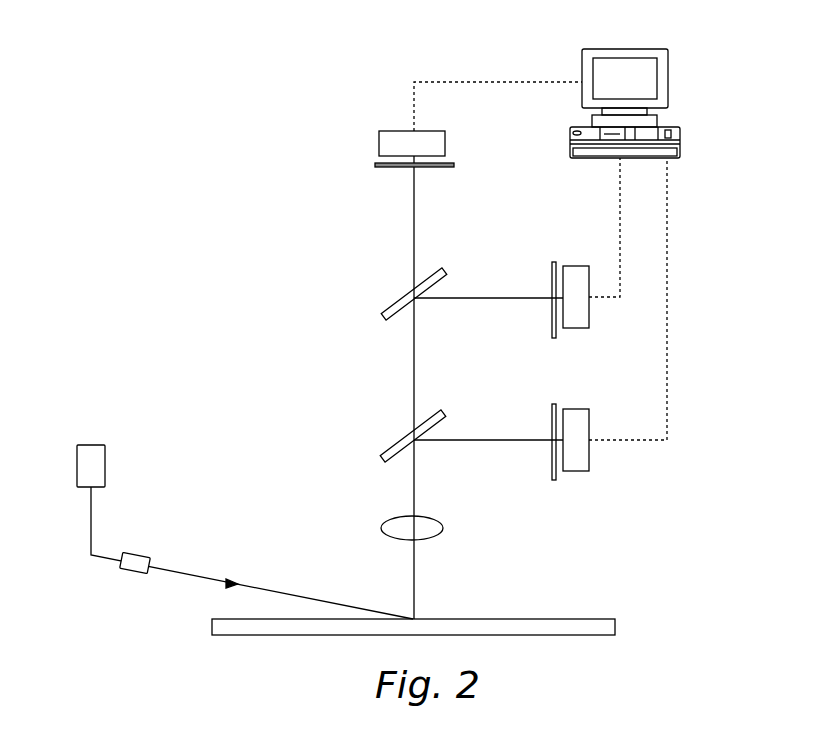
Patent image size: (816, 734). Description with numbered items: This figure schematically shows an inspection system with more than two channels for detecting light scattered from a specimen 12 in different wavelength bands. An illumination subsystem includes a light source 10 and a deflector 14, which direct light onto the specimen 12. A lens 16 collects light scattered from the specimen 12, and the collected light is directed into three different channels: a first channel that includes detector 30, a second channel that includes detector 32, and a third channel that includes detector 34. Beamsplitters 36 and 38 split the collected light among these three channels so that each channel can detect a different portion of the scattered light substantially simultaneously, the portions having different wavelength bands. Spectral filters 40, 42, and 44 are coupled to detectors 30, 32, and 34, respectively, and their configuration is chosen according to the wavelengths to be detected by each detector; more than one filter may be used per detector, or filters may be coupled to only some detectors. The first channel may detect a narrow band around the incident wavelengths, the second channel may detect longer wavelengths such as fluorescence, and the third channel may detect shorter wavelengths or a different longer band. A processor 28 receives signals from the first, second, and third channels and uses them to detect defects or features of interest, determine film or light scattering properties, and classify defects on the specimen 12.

The light source 10 is at (88, 445).
The specimen 12 is at (604, 618).
The deflector 14 is at (140, 553).
The lens 16 is at (441, 527).
The processor 28 is at (668, 81).
The detector 30 is at (590, 472).
The detector 32 is at (590, 330).
The detector 34 is at (390, 131).
The beamsplitter 36 is at (388, 442).
The beamsplitter 38 is at (388, 300).
The spectral filter 40 is at (552, 470).
The spectral filter 42 is at (552, 328).
The spectral filter 44 is at (452, 165).